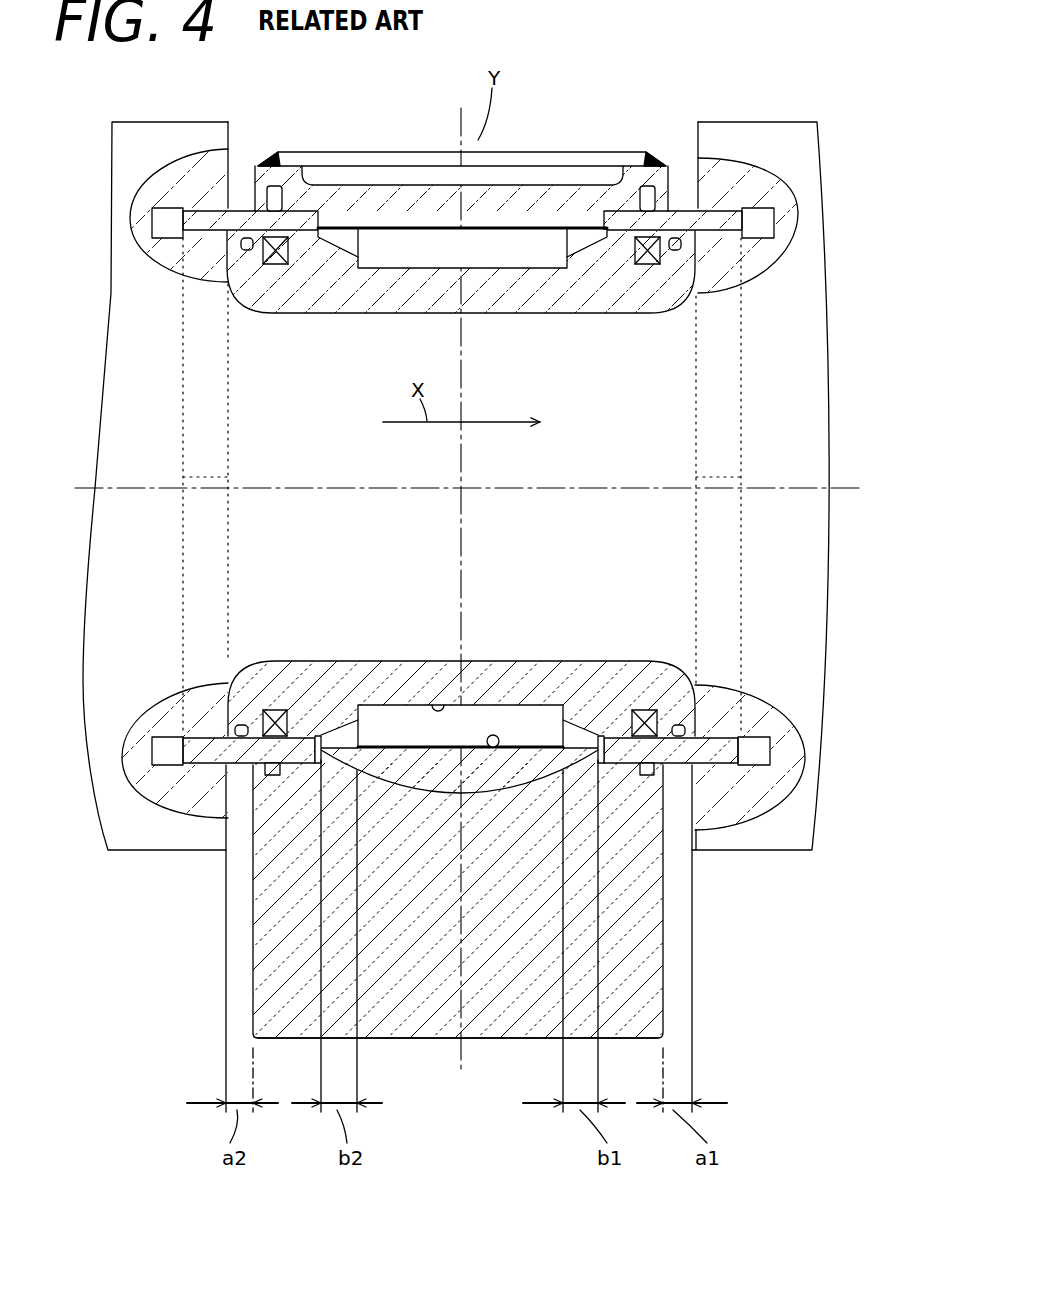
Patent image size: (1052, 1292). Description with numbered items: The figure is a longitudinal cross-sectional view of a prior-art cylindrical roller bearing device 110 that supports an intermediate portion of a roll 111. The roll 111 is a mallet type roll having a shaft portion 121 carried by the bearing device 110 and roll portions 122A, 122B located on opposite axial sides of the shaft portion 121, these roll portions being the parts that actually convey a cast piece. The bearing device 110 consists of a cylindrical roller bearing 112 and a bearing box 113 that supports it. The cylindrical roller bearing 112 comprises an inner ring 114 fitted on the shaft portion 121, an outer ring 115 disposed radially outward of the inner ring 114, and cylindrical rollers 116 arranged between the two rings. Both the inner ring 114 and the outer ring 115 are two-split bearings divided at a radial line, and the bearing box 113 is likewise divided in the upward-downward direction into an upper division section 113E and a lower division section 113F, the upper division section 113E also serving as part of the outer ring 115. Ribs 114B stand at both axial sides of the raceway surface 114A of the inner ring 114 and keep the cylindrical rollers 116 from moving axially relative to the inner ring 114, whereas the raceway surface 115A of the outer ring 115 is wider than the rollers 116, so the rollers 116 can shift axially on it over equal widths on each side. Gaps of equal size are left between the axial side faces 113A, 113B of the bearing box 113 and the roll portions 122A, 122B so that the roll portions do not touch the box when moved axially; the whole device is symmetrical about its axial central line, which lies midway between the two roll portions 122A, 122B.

The cylindrical roller bearing device 110 is at (655, 130).
The roll 111 is at (222, 119).
The cylindrical roller bearing 112 is at (498, 652).
The bearing box 113 is at (244, 948).
The axial side face 113A is at (663, 942).
The axial side face 113B is at (253, 896).
The upper division section 113E is at (363, 200).
The division section 113F is at (270, 980).
The inner ring 114 is at (357, 670).
The raceway surface 114A is at (438, 712).
The ribs 114B is at (312, 690).
The outer ring 115 is at (530, 743).
The raceway surface 115A is at (493, 760).
The cylindrical rollers 116 is at (402, 727).
The shaft portion 121 is at (540, 345).
The roll portion 122A is at (768, 850).
The roll portion 122B is at (143, 850).